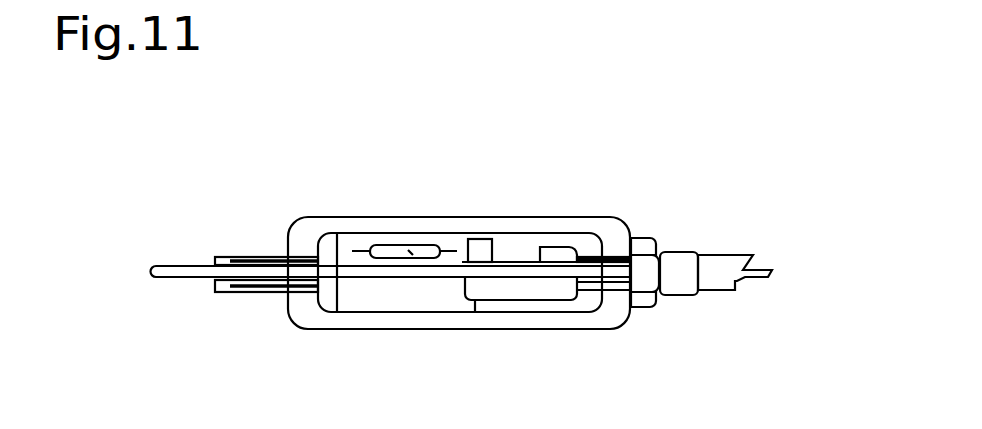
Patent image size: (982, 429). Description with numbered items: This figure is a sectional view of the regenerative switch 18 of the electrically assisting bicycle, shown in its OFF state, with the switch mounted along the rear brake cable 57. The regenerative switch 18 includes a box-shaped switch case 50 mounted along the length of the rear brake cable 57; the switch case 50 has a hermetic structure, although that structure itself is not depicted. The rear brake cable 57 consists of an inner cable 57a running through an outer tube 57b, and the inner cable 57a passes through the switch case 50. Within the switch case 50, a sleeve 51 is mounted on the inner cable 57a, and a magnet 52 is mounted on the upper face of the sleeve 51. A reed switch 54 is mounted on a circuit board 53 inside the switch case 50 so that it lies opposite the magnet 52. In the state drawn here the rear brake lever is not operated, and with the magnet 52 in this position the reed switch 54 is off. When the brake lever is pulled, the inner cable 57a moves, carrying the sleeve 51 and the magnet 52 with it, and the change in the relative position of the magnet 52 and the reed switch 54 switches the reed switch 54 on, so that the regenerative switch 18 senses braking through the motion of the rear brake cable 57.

The regenerative switch 18 is at (563, 213).
The switch case 50 is at (335, 329).
The circuit board 53 is at (419, 300).
The reed switch 54 is at (398, 245).
The magnet 52 is at (481, 239).
The sleeve 51 is at (530, 288).
The rear brake cable 57 is at (728, 260).
The inner cable 57a is at (183, 278).
The outer tube 57b is at (240, 257).